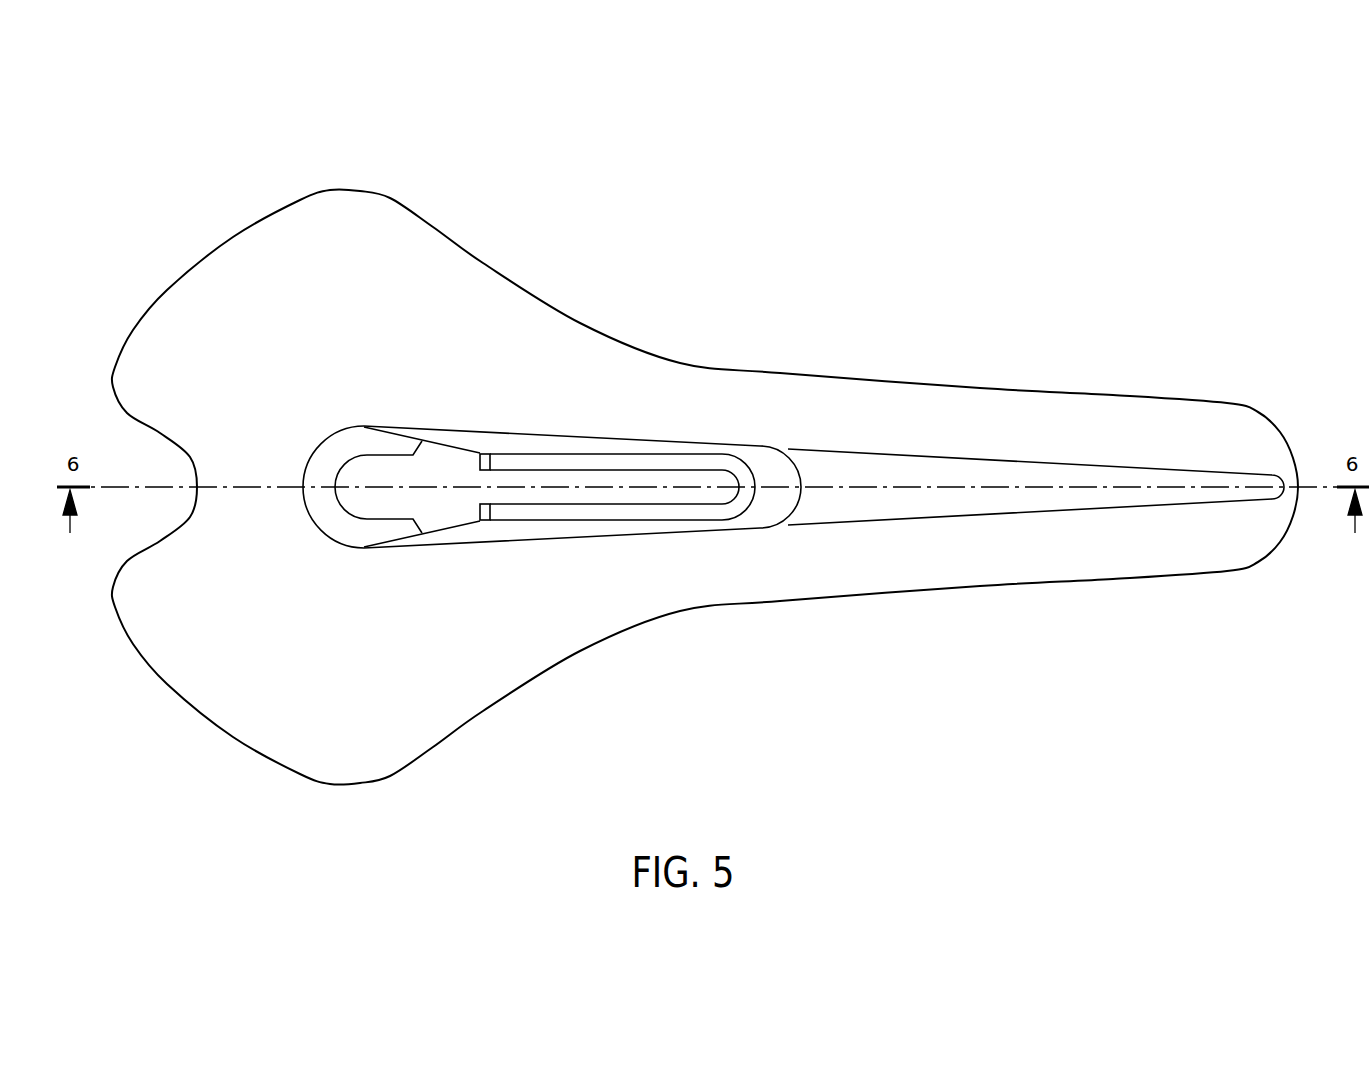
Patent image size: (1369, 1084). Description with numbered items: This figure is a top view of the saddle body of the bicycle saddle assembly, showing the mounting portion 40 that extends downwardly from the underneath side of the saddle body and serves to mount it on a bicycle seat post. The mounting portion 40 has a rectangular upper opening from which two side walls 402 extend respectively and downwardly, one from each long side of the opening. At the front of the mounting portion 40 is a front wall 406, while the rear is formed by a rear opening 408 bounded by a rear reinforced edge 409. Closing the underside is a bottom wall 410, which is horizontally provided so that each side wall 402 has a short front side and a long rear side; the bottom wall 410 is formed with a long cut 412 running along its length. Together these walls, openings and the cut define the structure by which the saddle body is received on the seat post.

The mounting portion 40 is at (622, 506).
The side walls 402 is at (505, 438).
The front wall 406 is at (775, 468).
The rear opening 408 is at (448, 467).
The rear reinforced edge 409 is at (347, 522).
The bottom wall 410 is at (655, 460).
The long cut 412 is at (558, 490).